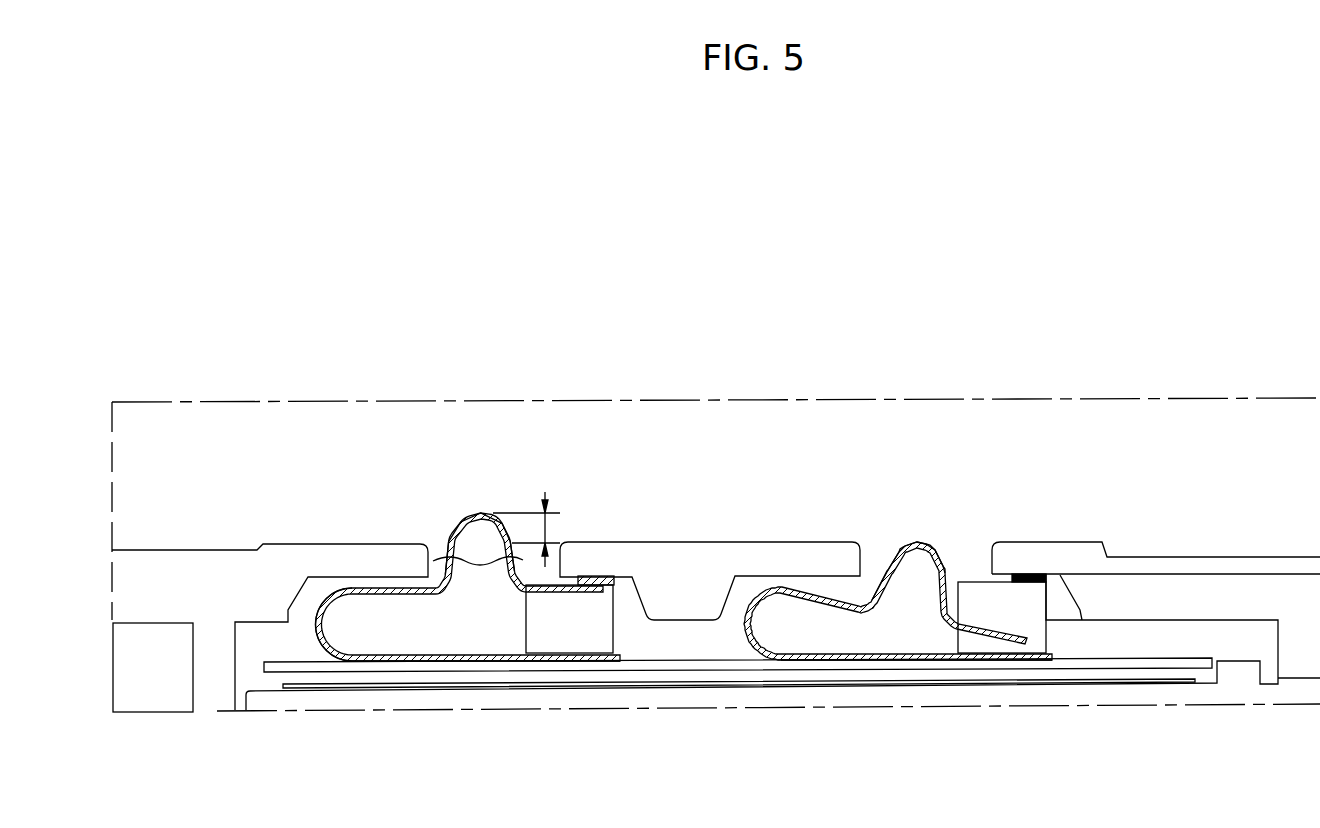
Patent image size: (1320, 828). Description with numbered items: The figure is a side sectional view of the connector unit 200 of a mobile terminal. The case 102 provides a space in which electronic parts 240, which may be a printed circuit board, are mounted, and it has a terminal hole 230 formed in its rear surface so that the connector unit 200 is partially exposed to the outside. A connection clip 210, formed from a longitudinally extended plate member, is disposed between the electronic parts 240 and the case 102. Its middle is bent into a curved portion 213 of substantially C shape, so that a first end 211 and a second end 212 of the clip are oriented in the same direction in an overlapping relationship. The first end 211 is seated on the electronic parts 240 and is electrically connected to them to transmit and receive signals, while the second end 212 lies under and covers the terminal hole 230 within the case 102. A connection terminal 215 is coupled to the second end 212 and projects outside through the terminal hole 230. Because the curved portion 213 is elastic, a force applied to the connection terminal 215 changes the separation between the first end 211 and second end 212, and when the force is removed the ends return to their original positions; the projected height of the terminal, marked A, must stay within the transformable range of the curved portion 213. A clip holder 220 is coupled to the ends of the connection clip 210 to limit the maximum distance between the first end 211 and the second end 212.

The connector unit 200 is at (210, 235).
The case 102 is at (128, 562).
The connection clip 210 is at (377, 567).
The first end 211 is at (572, 656).
The second end 212 is at (580, 582).
The curved portion 213 is at (318, 626).
The connection terminal 215 is at (482, 562).
The clip holder 220 is at (592, 634).
The terminal hole 230 is at (488, 516).
The electronic parts 240 is at (316, 663).